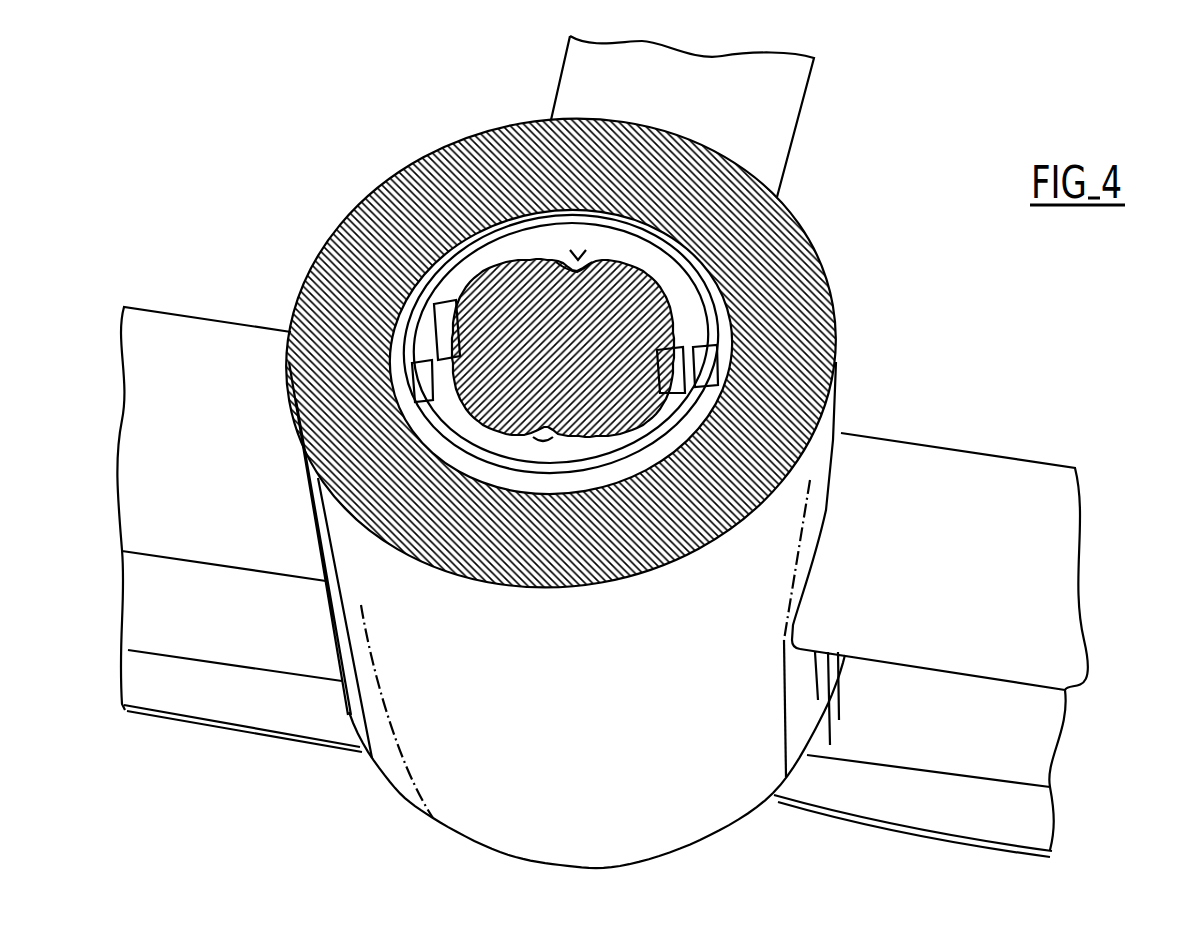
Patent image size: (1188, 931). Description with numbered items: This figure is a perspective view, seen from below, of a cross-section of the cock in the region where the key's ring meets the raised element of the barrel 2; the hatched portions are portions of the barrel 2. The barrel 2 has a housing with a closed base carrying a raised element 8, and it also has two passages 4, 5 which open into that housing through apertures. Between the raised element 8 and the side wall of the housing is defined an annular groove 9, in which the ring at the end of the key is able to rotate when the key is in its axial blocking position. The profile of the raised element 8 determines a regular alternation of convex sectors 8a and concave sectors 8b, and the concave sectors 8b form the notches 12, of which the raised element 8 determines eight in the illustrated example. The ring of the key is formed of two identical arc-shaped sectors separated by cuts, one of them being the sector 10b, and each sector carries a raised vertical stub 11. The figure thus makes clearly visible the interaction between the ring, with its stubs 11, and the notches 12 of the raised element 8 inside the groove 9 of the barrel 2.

The barrel 2 is at (790, 305).
The passage 4 is at (197, 364).
The passage 5 is at (985, 485).
The raised element 8 is at (620, 435).
The convex sectors 8a is at (556, 240).
The concave sectors 8b is at (705, 398).
The annular groove 9 is at (456, 258).
The arc-shaped sector 10b is at (490, 250).
The raised vertical stub 11 is at (585, 262).
The notches 12 is at (445, 440).